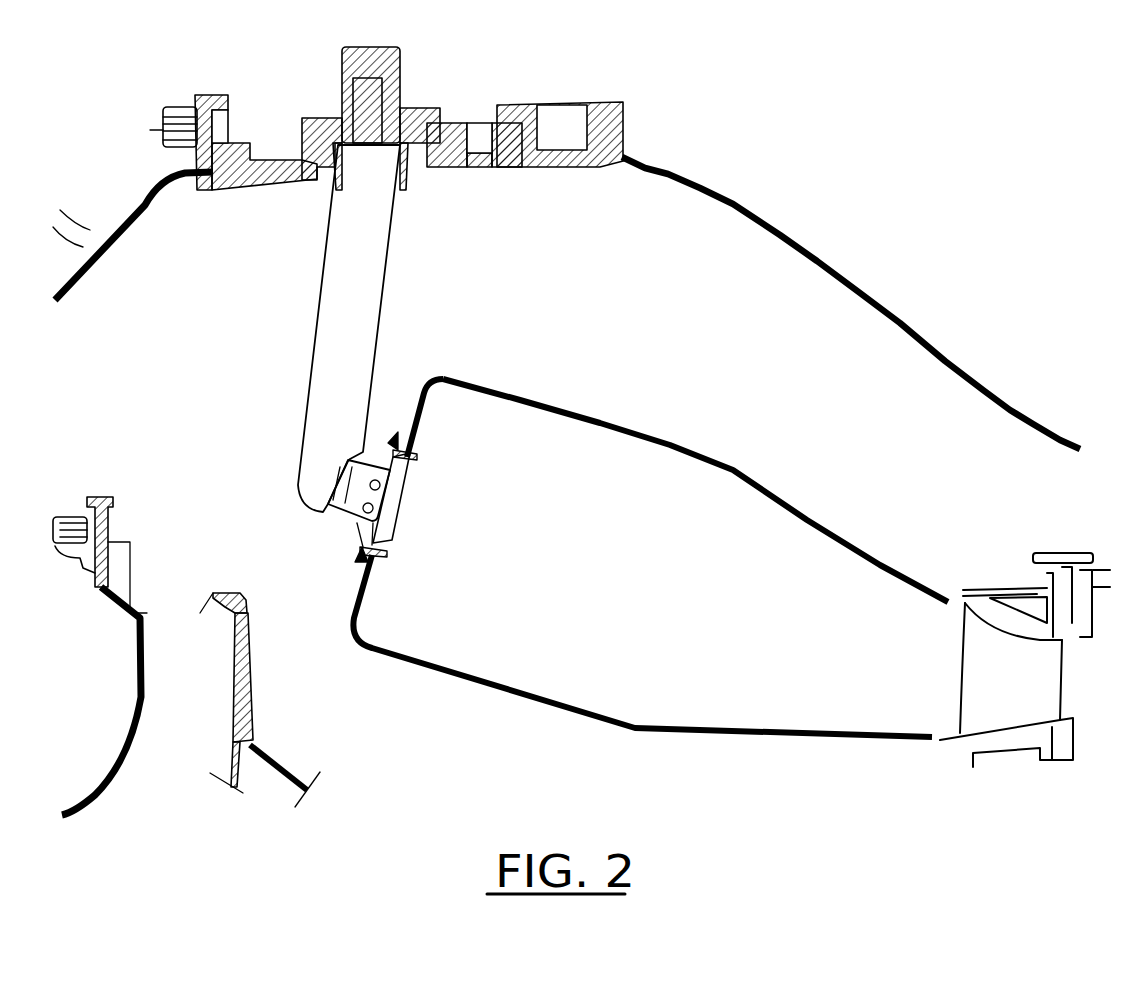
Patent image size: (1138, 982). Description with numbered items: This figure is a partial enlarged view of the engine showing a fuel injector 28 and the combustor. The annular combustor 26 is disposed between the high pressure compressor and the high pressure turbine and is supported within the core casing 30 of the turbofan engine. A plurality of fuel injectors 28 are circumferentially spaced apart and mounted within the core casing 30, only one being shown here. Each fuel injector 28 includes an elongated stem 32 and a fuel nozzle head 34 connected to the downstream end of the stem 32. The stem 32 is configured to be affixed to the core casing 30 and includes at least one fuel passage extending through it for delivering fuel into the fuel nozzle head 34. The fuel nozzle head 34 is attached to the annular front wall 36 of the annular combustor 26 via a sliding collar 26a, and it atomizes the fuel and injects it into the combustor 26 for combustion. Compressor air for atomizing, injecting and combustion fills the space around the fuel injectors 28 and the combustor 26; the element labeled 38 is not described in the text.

The annular combustor 26 is at (650, 558).
The sliding collar 26a is at (388, 553).
The fuel injector 28 is at (289, 328).
The core casing 30 is at (816, 262).
The elongated stem 32 is at (333, 390).
The fuel nozzle head 34 is at (352, 535).
The annular front wall 36 is at (418, 404).
The turbine blade 38 is at (210, 688).